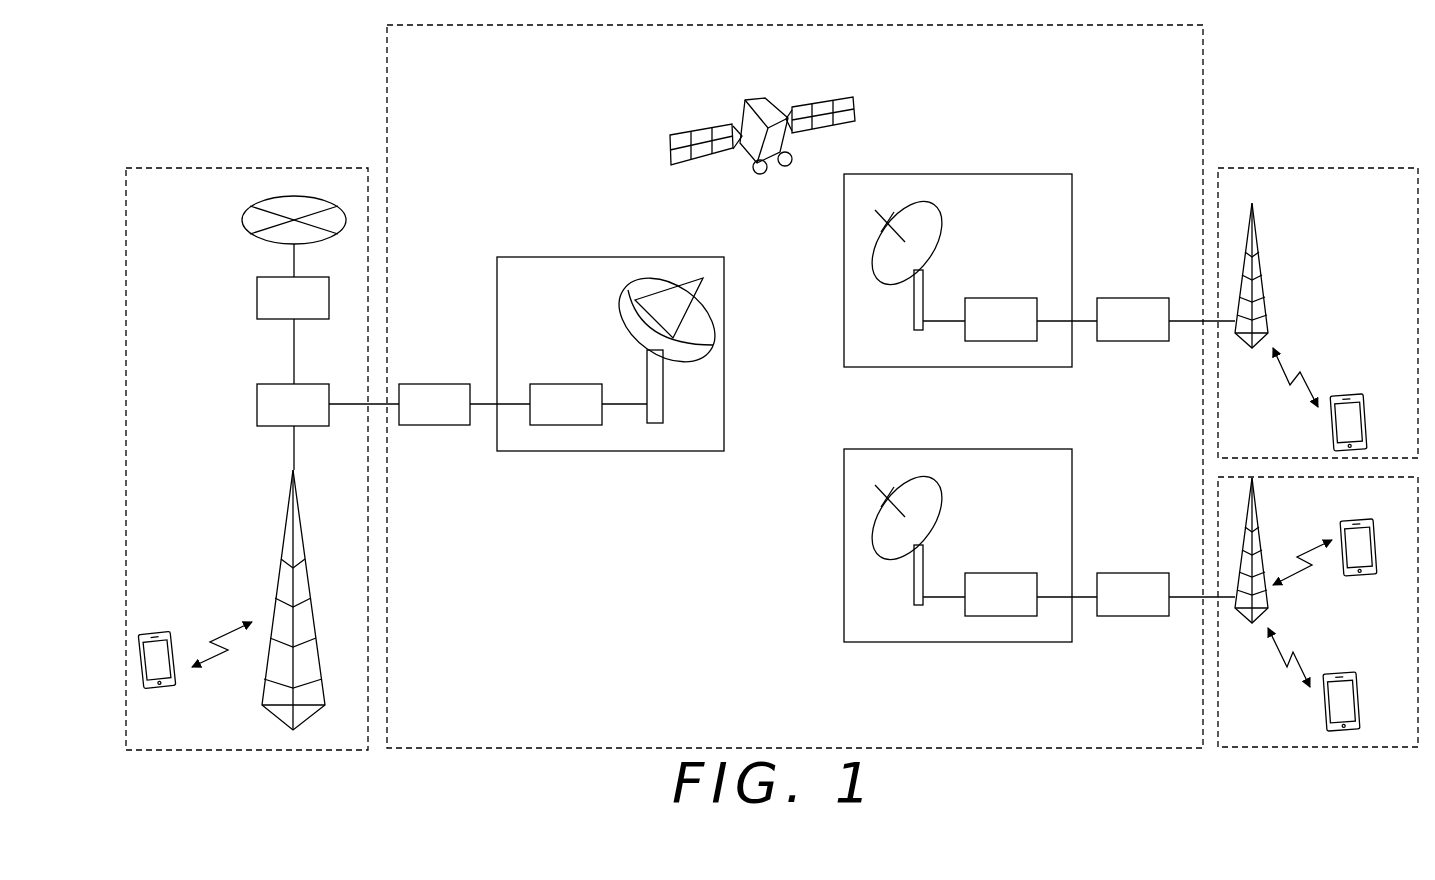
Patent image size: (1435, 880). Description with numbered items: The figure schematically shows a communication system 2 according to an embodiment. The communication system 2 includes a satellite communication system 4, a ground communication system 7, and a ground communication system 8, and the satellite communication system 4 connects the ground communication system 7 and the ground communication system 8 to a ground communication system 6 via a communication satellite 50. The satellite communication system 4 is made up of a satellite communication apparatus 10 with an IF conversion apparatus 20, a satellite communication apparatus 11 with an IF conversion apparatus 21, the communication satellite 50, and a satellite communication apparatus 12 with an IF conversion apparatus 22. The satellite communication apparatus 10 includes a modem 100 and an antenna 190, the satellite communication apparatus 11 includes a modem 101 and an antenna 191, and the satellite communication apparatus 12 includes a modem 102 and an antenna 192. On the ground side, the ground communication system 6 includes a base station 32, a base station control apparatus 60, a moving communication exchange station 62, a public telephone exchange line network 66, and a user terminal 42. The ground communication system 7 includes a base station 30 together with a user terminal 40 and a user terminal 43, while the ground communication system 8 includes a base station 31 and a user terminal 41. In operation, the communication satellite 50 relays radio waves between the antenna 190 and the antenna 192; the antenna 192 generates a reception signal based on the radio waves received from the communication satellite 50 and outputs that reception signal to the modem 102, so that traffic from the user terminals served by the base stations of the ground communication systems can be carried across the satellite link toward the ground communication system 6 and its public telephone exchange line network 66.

The communication system 2 is at (787, 15).
The satellite communication system 4 is at (1137, 748).
The ground communication system 6 is at (340, 750).
The ground communication system 7 is at (1333, 747).
The ground communication system 8 is at (1340, 168).
The satellite communication apparatus 10 is at (1073, 488).
The satellite communication apparatus 11 is at (1073, 213).
The satellite communication apparatus 12 is at (496, 298).
The IF conversion apparatus 20 is at (1130, 572).
The IF conversion apparatus 21 is at (1130, 297).
The IF conversion apparatus 22 is at (450, 383).
The base station 30 is at (1262, 523).
The base station 31 is at (1262, 263).
The base station 32 is at (303, 543).
The user terminal 40 is at (1335, 673).
The user terminal 41 is at (1342, 397).
The user terminal 42 is at (167, 688).
The user terminal 43 is at (1350, 520).
The communication satellite 50 is at (857, 102).
The base station control apparatus 60 is at (275, 427).
The moving communication exchange station 62 is at (275, 320).
The public telephone exchange line network 66 is at (262, 243).
The modem 100 is at (997, 572).
The modem 101 is at (997, 297).
The modem 102 is at (568, 383).
The antenna 190 is at (940, 512).
The antenna 191 is at (940, 237).
The antenna 192 is at (622, 318).